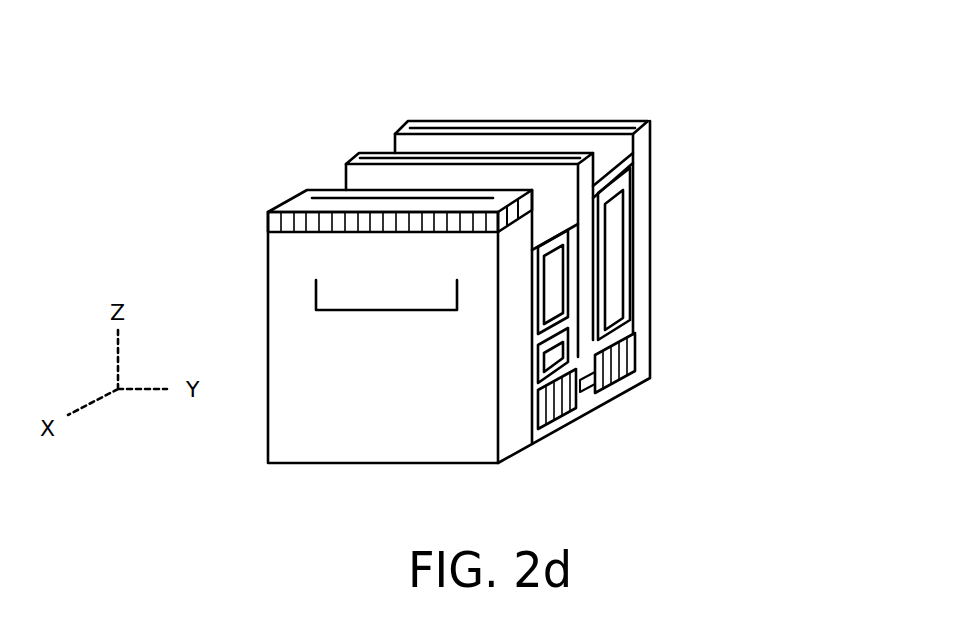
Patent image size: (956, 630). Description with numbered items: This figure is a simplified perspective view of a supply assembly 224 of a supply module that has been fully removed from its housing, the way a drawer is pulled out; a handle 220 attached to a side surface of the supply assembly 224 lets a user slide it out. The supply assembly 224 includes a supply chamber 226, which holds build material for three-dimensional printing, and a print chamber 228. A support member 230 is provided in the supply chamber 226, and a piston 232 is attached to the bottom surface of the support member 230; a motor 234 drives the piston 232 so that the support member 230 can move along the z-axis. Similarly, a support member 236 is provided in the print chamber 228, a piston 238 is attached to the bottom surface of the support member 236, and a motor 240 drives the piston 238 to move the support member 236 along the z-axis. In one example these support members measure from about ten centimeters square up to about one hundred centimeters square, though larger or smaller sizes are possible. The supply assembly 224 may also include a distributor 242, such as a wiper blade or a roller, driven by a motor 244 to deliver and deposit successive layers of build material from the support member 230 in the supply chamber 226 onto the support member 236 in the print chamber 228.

The handle 220 is at (360, 310).
The supply assembly 224 is at (559, 100).
The supply chamber 226 is at (332, 180).
The print chamber 228 is at (377, 137).
The support member 230 is at (538, 266).
The piston 232 is at (548, 315).
The motor 234 is at (565, 415).
The support member 236 is at (633, 152).
The piston 238 is at (628, 245).
The motor 240 is at (620, 392).
The distributor 242 is at (307, 192).
The motor 244 is at (266, 216).